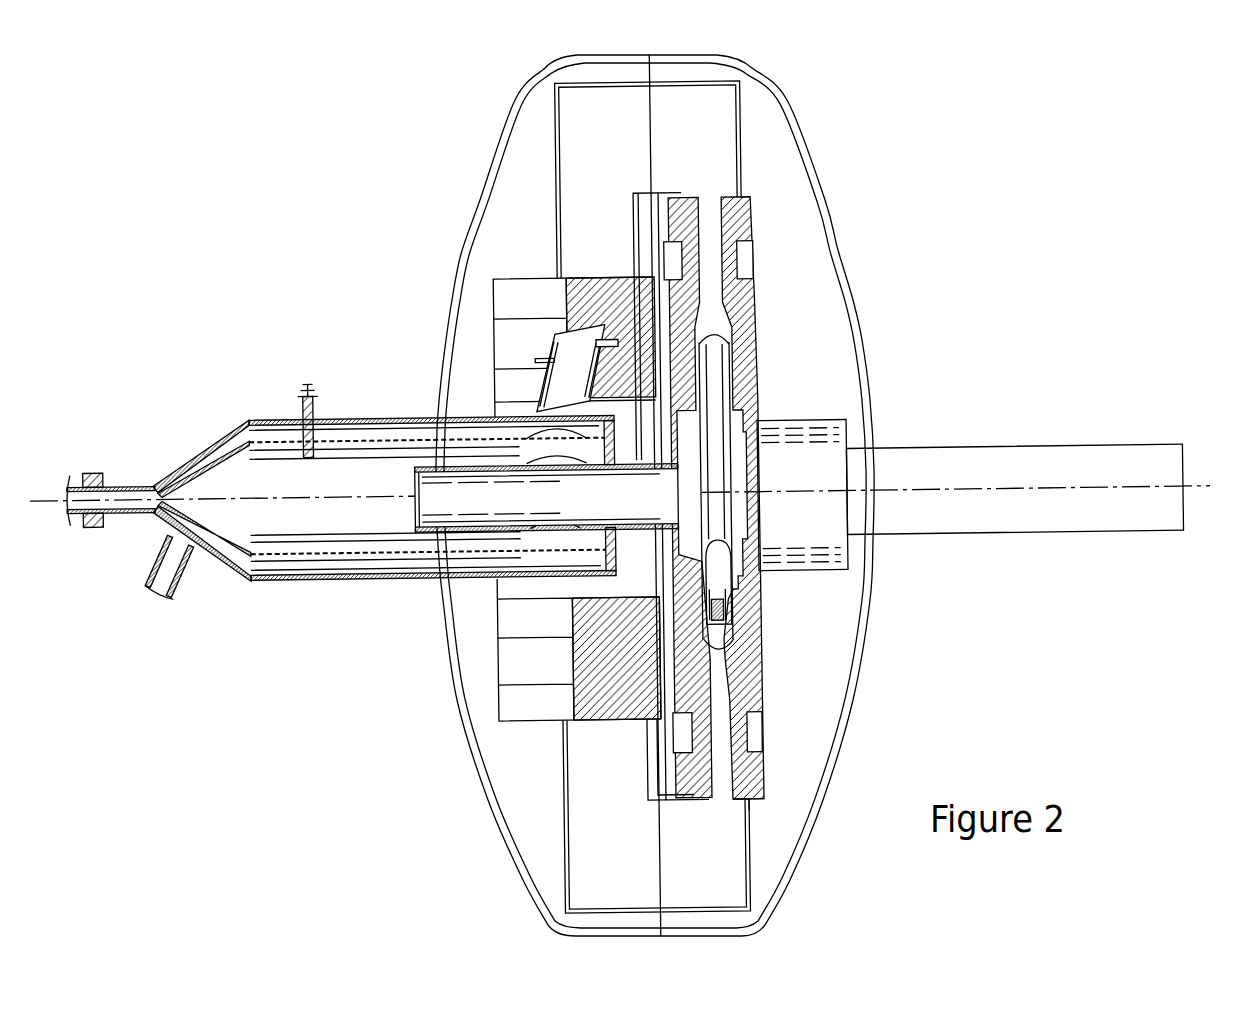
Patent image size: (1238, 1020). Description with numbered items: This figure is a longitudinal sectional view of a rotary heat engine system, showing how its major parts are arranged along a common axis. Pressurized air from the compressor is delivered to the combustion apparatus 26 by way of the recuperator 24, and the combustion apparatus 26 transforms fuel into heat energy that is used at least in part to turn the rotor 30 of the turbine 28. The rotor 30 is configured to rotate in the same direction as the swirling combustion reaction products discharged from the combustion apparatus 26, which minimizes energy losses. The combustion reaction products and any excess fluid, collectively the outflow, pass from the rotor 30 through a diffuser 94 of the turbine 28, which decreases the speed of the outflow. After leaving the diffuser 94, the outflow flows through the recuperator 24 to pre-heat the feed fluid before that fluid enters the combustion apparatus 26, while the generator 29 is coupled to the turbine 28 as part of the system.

The recuperator 24 is at (611, 268).
The combustion apparatus 26 is at (268, 477).
The turbine 28 is at (774, 291).
The generator 29 is at (963, 447).
The rotor 30 is at (725, 608).
The diffuser 94 is at (725, 783).